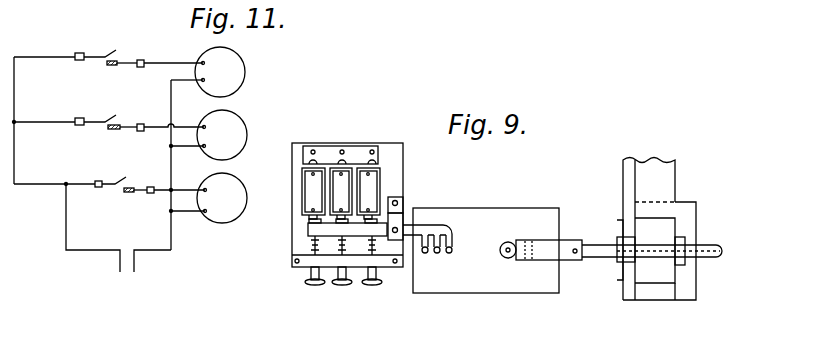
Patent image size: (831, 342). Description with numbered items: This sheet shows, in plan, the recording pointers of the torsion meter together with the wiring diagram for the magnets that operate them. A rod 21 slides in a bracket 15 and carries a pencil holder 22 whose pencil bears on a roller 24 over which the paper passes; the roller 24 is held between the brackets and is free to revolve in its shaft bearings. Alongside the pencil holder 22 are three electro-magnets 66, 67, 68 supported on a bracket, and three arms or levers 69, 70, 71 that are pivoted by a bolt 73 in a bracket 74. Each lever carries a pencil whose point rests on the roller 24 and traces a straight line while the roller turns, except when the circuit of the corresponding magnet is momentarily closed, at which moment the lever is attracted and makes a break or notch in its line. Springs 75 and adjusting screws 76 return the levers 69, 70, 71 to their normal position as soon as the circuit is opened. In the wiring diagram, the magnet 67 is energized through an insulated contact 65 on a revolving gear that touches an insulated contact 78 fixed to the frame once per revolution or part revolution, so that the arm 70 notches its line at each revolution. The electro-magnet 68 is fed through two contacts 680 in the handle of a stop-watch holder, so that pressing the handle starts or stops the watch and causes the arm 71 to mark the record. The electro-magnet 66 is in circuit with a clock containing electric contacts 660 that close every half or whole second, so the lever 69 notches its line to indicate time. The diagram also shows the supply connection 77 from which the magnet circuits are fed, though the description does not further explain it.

In FIG. 9, the bracket 15 is at (668, 178).
In FIG. 9, the rod 21 is at (592, 245).
In FIG. 9, the pencil holder 22 is at (509, 259).
In FIG. 9, the roller 24 is at (517, 213).
In FIG. 11, the insulated contact 65 is at (116, 180).
In FIG. 11, the electro-magnet 66 is at (247, 130).
In FIG. 9, the electro-magnet 66 is at (317, 180).
In FIG. 11, the magnet 67 is at (245, 186).
In FIG. 9, the magnet 67 is at (345, 180).
In FIG. 11, the electro-magnet 68 is at (246, 70).
In FIG. 9, the electro-magnet 68 is at (365, 180).
In FIG. 9, the lever 69 is at (453, 250).
In FIG. 9, the arm 70 is at (440, 253).
In FIG. 9, the arm 71 is at (425, 254).
In FIG. 9, the bolt 73 is at (401, 223).
In FIG. 9, the bracket 74 is at (399, 197).
In FIG. 9, the springs 75 is at (373, 246).
In FIG. 9, the adjusting screws 76 is at (370, 285).
In FIG. 11, the supply plug 77 is at (128, 272).
In FIG. 11, the insulated contact 78 is at (143, 195).
In FIG. 11, the electric contacts 660 is at (112, 127).
In FIG. 11, the contacts 680 is at (115, 62).